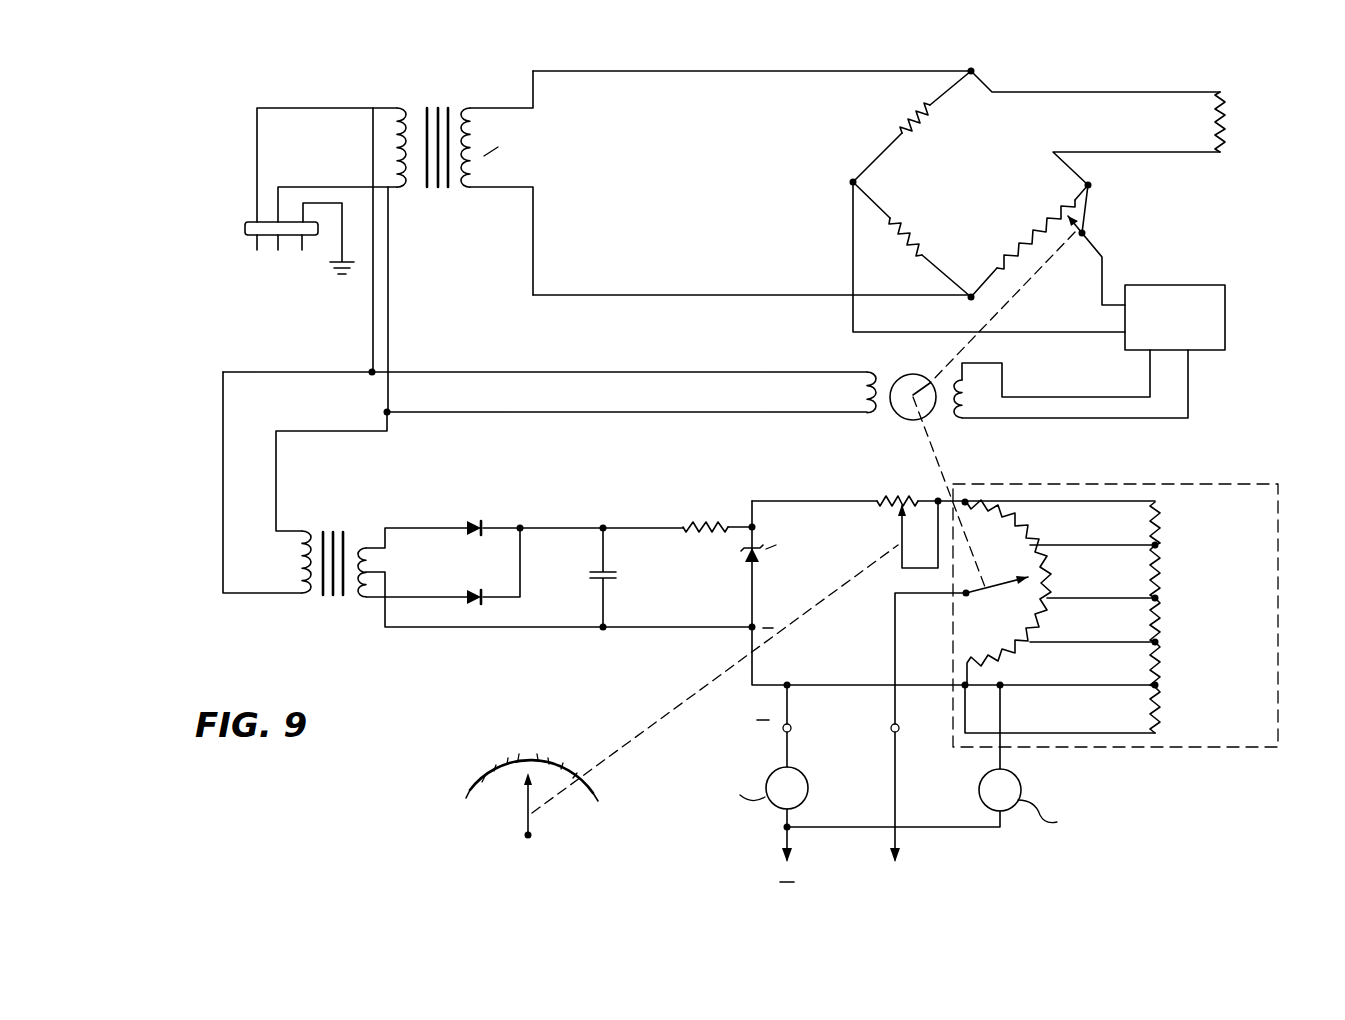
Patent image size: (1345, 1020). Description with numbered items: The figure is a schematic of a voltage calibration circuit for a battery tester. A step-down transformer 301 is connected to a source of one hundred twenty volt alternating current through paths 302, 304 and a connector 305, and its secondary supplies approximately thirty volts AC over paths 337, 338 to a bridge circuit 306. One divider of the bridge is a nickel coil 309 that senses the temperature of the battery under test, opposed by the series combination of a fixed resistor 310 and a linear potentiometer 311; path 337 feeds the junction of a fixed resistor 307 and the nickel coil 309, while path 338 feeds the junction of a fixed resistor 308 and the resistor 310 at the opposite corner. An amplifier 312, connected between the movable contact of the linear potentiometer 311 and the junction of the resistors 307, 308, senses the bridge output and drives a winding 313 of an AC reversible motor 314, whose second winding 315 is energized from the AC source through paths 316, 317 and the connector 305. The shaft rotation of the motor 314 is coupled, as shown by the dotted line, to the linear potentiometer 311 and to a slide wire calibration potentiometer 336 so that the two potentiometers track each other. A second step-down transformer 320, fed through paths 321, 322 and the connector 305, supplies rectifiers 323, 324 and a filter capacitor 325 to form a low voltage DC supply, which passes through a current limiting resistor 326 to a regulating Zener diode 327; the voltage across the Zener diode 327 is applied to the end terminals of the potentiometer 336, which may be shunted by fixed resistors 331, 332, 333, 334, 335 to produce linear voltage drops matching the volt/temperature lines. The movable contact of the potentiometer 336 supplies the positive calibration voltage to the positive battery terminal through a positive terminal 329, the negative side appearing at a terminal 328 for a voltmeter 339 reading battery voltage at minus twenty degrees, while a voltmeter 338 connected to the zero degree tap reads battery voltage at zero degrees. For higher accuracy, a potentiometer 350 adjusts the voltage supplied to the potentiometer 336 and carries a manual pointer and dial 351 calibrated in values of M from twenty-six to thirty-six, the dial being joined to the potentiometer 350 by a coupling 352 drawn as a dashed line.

The step-down transformer 301 is at (425, 107).
The path 302 is at (340, 105).
The path 304 is at (343, 186).
The connector 305 is at (245, 228).
The bridge circuit 306 is at (977, 71).
The fixed resistor 307 is at (918, 136).
The fixed resistor 308 is at (918, 238).
The nickel coil 309 is at (1220, 90).
The fixed resistor 310 is at (1000, 262).
The linear potentiometer 311 is at (1060, 210).
The amplifier 312 is at (1182, 285).
The winding 313 is at (988, 363).
The AC reversible motor 314 is at (928, 378).
The second winding 315 is at (867, 415).
The path 316 is at (548, 372).
The path 317 is at (560, 412).
The second step-down transformer 320 is at (335, 597).
The path 321 is at (223, 392).
The path 322 is at (325, 431).
The rectifier 323 is at (447, 527).
The rectifier 324 is at (447, 596).
The filter capacitor 325 is at (610, 582).
The current limiting resistor 326 is at (688, 520).
The Zener diode 327 is at (757, 565).
The terminal 328 is at (780, 732).
The voltmeter positive terminal 329 is at (898, 733).
The fixed resistor 331 is at (1160, 540).
The fixed resistor 332 is at (1160, 580).
The fixed resistor 333 is at (1160, 630).
The fixed resistor 334 is at (1160, 678).
The fixed resistor 335 is at (1160, 722).
The calibration potentiometer 336 is at (1290, 752).
The path 337 is at (652, 70).
The path / voltmeter 338 is at (630, 294).
The voltmeter 339 is at (805, 778).
The potentiometer 350 is at (903, 497).
The pointer and dial 351 is at (465, 813).
The mechanical linkage 352 is at (685, 700).